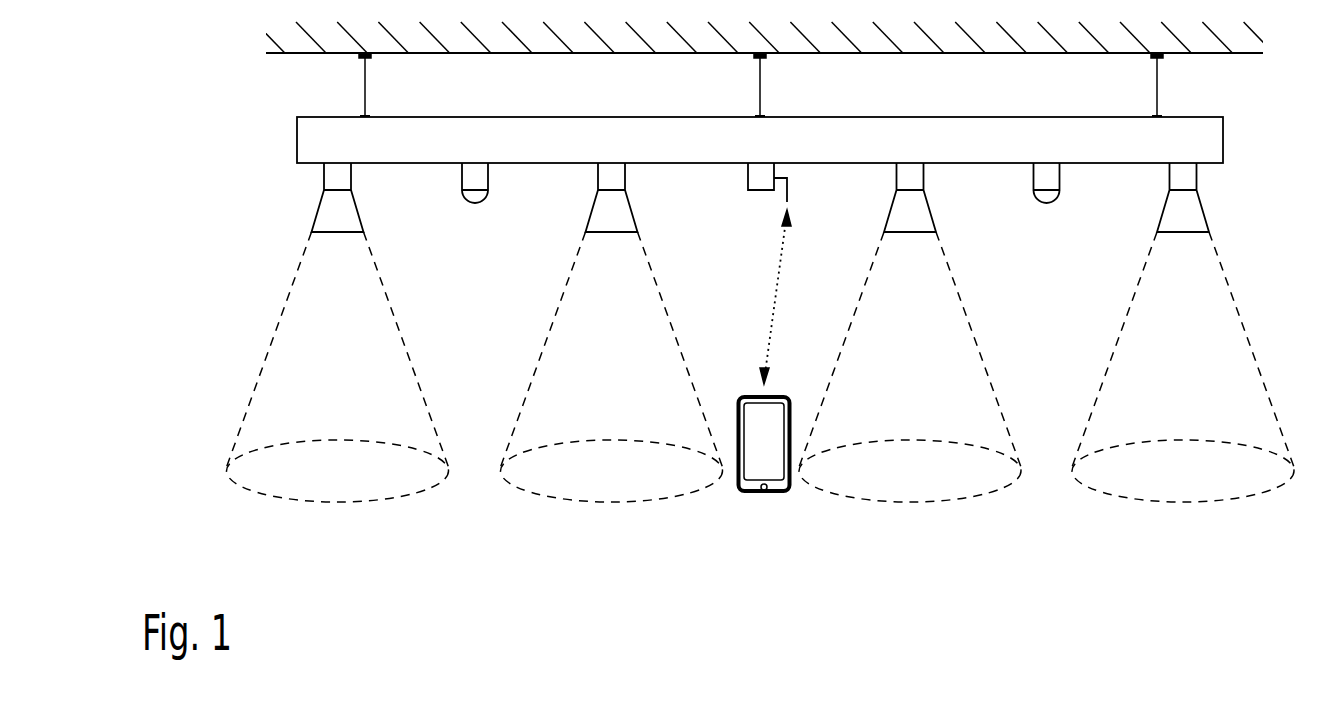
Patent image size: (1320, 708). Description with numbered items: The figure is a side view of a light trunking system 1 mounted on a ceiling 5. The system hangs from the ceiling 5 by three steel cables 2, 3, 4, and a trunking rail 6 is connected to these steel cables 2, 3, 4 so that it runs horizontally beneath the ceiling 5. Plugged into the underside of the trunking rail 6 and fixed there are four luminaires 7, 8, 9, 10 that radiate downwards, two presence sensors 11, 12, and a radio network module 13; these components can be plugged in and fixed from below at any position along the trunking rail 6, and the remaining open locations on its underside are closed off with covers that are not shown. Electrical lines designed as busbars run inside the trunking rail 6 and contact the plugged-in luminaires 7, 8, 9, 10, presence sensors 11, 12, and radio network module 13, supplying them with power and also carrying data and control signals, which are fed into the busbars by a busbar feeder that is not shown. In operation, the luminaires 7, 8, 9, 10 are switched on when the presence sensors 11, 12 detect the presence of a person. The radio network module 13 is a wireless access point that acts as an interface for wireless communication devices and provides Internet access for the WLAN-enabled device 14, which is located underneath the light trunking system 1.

The light trunking system 1 is at (266, 138).
The steel cable 2 is at (365, 87).
The steel cable 3 is at (760, 87).
The steel cable 4 is at (1157, 87).
The ceiling 5 is at (1247, 55).
The trunking rail 6 is at (1210, 142).
The luminaire 7 is at (345, 209).
The luminaire 8 is at (618, 209).
The luminaire 9 is at (917, 209).
The luminaire 10 is at (1190, 209).
The presence sensor 11 is at (478, 178).
The presence sensor 12 is at (1050, 178).
The radio network module 13 is at (761, 182).
The WLAN-enabled device 14 is at (757, 485).